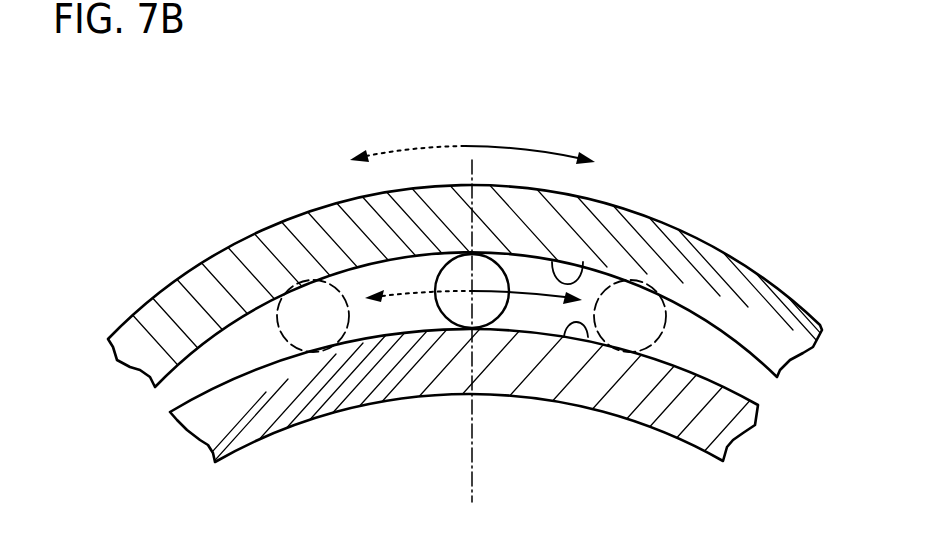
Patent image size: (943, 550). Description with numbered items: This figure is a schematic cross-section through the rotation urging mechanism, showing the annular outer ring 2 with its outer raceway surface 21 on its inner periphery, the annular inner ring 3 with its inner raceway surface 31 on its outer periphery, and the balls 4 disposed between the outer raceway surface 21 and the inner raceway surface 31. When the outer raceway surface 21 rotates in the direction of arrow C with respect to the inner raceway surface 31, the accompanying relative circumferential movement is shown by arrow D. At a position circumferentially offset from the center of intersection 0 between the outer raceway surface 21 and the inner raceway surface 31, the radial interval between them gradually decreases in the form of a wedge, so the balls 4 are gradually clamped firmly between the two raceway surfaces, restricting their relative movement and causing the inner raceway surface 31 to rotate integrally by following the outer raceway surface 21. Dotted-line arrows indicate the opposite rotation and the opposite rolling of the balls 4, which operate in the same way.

The outer ring 2 is at (733, 280).
The outer raceway surface 21 is at (585, 272).
The inner ring 3 is at (676, 417).
The inner raceway surface 31 is at (568, 338).
The balls 4 is at (453, 311).
The direction of rotation of the outer raceway surface C is at (550, 148).
The direction of relative circumferential movement D is at (541, 298).
The center of intersection 0 is at (472, 458).